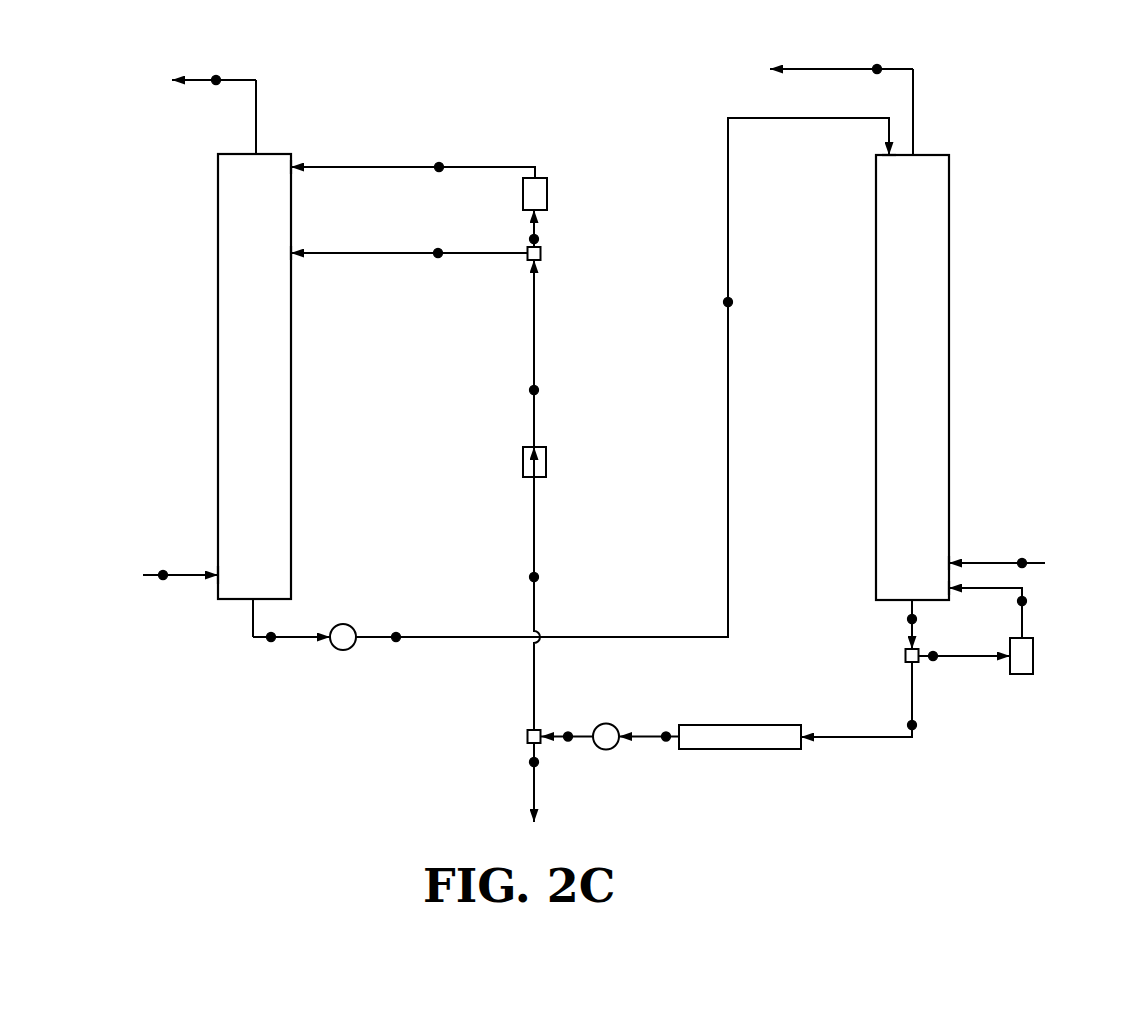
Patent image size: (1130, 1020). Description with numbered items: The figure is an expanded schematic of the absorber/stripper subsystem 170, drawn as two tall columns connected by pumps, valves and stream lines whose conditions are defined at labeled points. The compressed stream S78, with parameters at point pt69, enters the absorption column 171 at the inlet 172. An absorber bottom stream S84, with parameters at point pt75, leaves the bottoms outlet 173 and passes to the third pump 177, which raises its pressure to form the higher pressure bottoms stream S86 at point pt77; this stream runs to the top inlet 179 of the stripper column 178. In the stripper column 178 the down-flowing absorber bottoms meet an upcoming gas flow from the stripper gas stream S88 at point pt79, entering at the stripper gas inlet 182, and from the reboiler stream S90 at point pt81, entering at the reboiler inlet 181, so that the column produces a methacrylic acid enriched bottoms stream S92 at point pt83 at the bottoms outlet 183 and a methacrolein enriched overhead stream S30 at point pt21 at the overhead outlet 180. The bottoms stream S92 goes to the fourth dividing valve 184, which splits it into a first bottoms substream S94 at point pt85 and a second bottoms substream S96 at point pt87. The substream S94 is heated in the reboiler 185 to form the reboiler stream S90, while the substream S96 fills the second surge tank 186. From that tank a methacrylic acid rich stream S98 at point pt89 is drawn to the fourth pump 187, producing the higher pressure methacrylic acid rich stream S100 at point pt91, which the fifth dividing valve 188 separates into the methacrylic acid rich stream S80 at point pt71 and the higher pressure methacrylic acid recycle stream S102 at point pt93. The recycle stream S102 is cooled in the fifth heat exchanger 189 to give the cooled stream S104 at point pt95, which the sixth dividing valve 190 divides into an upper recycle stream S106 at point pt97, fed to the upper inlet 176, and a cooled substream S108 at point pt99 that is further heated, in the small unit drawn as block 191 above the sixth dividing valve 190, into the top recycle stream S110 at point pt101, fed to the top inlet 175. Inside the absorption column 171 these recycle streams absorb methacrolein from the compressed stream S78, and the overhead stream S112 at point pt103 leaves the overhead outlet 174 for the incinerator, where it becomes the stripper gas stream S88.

The absorber/stripper subsystem 170 is at (1025, 278).
The absorption column 171 is at (268, 382).
The inlet 172 is at (220, 576).
The bottoms outlet 173 is at (242, 603).
The overhead outlet 174 is at (258, 153).
The top inlet 175 is at (289, 167).
The upper inlet 176 is at (289, 254).
The third pump 177 is at (348, 653).
The stripper column 178 is at (928, 382).
The top inlet 179 is at (892, 157).
The overhead outlet 180 is at (923, 153).
The reboiler inlet 181 is at (947, 590).
The stripper gas inlet 182 is at (947, 563).
The bottoms outlet 183 is at (910, 600).
The fourth dividing valve 184 is at (905, 655).
The reboiler 185 is at (1022, 655).
The second surge tank 186 is at (740, 735).
The fourth pump 187 is at (607, 723).
The fifth dividing valve 188 is at (527, 728).
The fifth heat exchanger 189 is at (520, 477).
The sixth dividing valve 190 is at (527, 258).
The heater 191 is at (535, 193).
The overhead stream S30 is at (792, 63).
The compressed stream S78 is at (195, 573).
The methacrylic acid rich stream S80 is at (532, 792).
The absorber bottom stream S84 is at (300, 633).
The higher pressure bottoms stream S86 is at (445, 635).
The stripper gas stream S88 is at (972, 560).
The reboiler stream S90 is at (985, 590).
The bottoms stream S92 is at (910, 632).
The first bottoms substream S94 is at (972, 657).
The second bottoms substream S96 is at (870, 737).
The methacrylic acid rich stream S98 is at (645, 750).
The higher pressure methacrylic acid rich stream S100 is at (552, 743).
The higher pressure methacrylic acid recycle stream S102 is at (537, 547).
The cooled stream S104 is at (537, 353).
The upper recycle stream S106 is at (403, 253).
The cooled substream S108 is at (540, 227).
The top recycle stream S110 is at (403, 165).
The overhead stream S112 is at (196, 83).
The point pt21 is at (880, 63).
The point pt69 is at (163, 583).
The point pt71 is at (530, 757).
The point pt75 is at (272, 645).
The point pt77 is at (398, 630).
The point pt79 is at (1018, 560).
The point pt81 is at (1023, 602).
The point pt83 is at (908, 627).
The point pt85 is at (923, 660).
The point pt87 is at (923, 724).
The point pt89 is at (667, 745).
The point pt91 is at (568, 743).
The point pt93 is at (537, 573).
The point pt95 is at (538, 392).
The point pt97 is at (450, 253).
The point pt99 is at (542, 237).
The point pt101 is at (452, 165).
The point pt103 is at (218, 88).